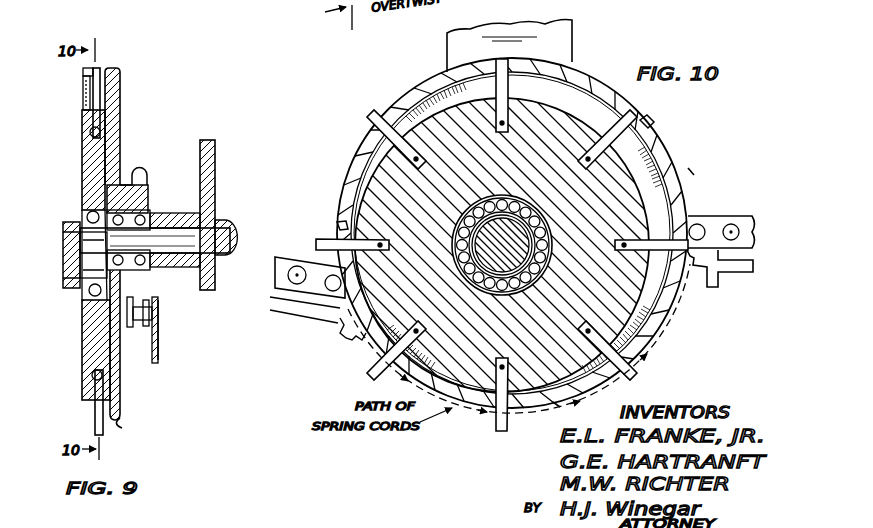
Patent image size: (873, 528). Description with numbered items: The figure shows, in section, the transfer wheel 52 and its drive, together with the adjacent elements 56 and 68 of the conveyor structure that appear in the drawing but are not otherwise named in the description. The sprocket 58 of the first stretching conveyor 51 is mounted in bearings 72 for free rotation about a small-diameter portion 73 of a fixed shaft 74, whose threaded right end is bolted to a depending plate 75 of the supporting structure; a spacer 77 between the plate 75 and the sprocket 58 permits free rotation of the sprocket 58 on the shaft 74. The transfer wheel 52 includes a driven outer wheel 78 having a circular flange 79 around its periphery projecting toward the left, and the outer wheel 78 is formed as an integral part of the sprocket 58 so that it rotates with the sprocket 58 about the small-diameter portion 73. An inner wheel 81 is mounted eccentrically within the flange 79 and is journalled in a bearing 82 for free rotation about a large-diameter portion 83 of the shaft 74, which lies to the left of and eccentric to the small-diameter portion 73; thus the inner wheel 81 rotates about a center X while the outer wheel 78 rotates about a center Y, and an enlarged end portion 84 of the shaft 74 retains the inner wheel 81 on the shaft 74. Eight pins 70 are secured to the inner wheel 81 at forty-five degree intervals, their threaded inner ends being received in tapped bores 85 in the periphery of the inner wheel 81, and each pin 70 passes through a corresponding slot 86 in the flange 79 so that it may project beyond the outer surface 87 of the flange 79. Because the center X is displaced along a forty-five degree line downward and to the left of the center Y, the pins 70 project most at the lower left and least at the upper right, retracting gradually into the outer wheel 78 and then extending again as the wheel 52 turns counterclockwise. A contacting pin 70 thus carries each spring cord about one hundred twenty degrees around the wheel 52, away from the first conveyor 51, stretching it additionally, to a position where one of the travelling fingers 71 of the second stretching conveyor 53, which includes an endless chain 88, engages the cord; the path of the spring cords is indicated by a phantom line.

In FIG. 9, the first stretching conveyor 51 is at (162, 334).
In FIG. 10, the first stretching conveyor 51 is at (298, 321).
In FIG. 9, the transfer wheel 52 is at (78, 384).
In FIG. 10, the transfer wheel 52 is at (601, 62).
In FIG. 10, the second stretching conveyor 53 is at (734, 210).
In FIG. 9, the pivot bolt 56 is at (129, 327).
In FIG. 10, the pivot bolt 56 is at (293, 257).
In FIG. 9, the sprocket 58 is at (126, 185).
In FIG. 9, the bracket 68 is at (158, 353).
In FIG. 10, the bracket 68 is at (342, 338).
In FIG. 9, the pins 70 is at (99, 68).
In FIG. 10, the pins 70 is at (370, 125).
In FIG. 10, the travelling fingers 71 is at (722, 287).
In FIG. 9, the bearings 72 is at (138, 196).
In FIG. 9, the small-diameter portion 73 is at (170, 228).
In FIG. 10, the small-diameter portion 73 is at (545, 221).
In FIG. 9, the fixed shaft 74 is at (236, 232).
In FIG. 10, the fixed shaft 74 is at (532, 268).
In FIG. 9, the depending plate 75 is at (207, 142).
In FIG. 10, the depending plate 75 is at (572, 36).
In FIG. 9, the spacer 77 is at (165, 264).
In FIG. 9, the outer wheel 78 is at (120, 87).
In FIG. 10, the outer wheel 78 is at (672, 155).
In FIG. 9, the circular flange 79 is at (83, 82).
In FIG. 10, the circular flange 79 is at (658, 133).
In FIG. 9, the inner wheel 81 is at (82, 170).
In FIG. 10, the inner wheel 81 is at (557, 113).
In FIG. 9, the bearing 82 is at (90, 293).
In FIG. 9, the large-diameter portion 83 is at (88, 258).
In FIG. 10, the large-diameter portion 83 is at (463, 256).
In FIG. 9, the enlarged end portion 84 is at (70, 222).
In FIG. 9, the tapped bores 85 is at (91, 136).
In FIG. 10, the tapped bores 85 is at (507, 105).
In FIG. 9, the slot 86 is at (83, 72).
In FIG. 10, the slot 86 is at (338, 230).
In FIG. 9, the outer surface 87 is at (122, 416).
In FIG. 10, the outer surface 87 is at (554, 402).
In FIG. 10, the endless chain 88 is at (690, 172).